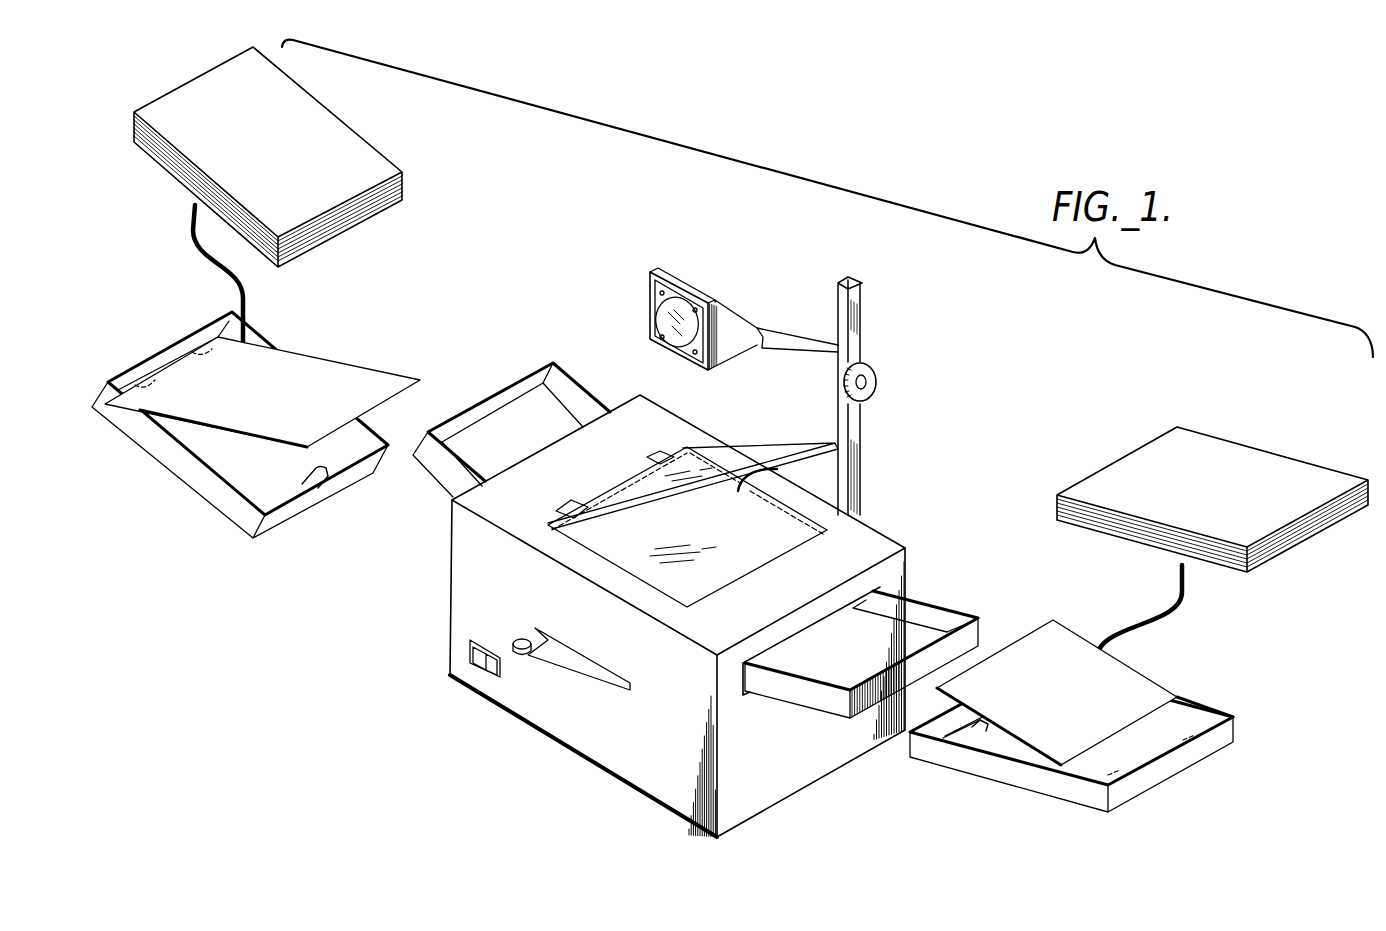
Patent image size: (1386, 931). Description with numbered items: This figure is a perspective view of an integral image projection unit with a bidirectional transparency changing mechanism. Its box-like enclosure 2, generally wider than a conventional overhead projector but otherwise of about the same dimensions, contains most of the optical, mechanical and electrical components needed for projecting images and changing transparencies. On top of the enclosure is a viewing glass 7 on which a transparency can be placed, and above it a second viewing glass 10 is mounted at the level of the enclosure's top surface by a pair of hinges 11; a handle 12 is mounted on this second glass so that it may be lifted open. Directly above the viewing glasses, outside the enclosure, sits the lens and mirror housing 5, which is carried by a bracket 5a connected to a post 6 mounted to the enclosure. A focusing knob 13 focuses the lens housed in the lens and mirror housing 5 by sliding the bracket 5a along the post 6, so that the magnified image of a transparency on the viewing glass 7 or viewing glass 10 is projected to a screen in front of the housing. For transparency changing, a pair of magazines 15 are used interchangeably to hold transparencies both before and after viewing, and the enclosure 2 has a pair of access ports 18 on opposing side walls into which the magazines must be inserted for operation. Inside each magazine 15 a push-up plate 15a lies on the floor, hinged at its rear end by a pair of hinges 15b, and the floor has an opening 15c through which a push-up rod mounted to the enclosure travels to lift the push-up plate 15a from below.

The enclosure 2 is at (552, 692).
The lens and mirror housing 5 is at (710, 305).
The bracket 5a is at (775, 330).
The post 6 is at (862, 295).
The viewing glass 7 is at (772, 533).
The viewing glass 10 is at (643, 500).
The hinge 11 is at (660, 490).
The handle 12 is at (727, 445).
The focusing knob 13 is at (872, 368).
The magazine 15 is at (497, 393).
The push-up plate 15a is at (168, 402).
The hinge 15b is at (195, 345).
The opening 15c is at (315, 478).
The access port 18 is at (747, 683).